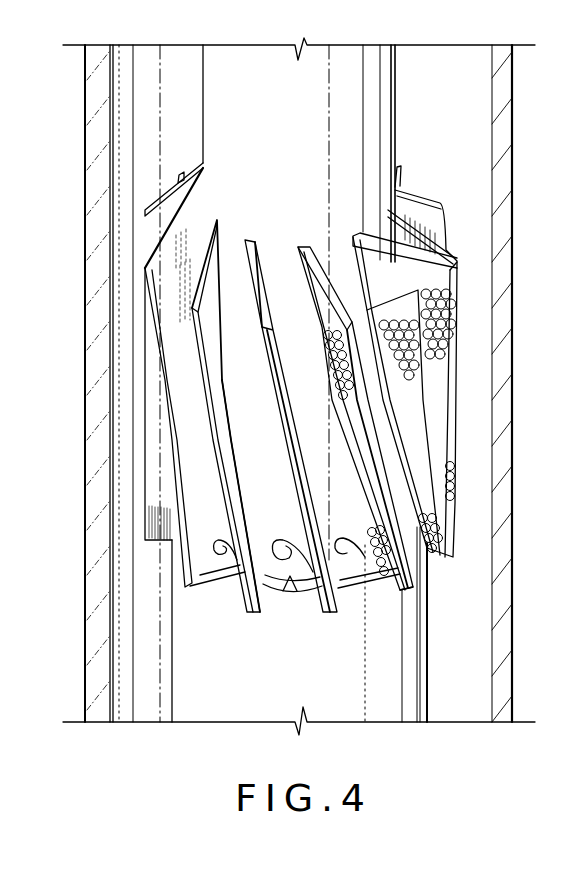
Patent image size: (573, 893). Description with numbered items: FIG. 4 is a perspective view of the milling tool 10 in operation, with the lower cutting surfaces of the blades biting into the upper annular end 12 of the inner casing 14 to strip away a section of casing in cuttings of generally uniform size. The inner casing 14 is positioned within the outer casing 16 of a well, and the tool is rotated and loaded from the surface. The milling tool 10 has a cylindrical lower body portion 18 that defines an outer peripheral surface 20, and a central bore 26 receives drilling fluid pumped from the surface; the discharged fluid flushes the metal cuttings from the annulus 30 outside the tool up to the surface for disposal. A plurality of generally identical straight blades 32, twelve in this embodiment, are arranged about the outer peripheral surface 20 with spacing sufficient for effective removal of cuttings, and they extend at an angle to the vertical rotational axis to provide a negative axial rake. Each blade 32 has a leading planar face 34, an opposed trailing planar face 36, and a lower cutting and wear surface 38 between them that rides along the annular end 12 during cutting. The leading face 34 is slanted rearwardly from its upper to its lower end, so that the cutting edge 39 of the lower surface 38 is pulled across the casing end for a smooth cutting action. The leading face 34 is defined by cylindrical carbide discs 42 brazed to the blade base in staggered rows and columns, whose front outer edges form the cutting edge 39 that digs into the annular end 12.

The milling tool 10 is at (472, 206).
The annular end 12 is at (290, 587).
The inner casing 14 is at (430, 673).
The outer casing 16 is at (503, 125).
The cylindrical lower body portion 18 is at (372, 83).
The outer peripheral surface 20 is at (379, 117).
The central bore 26 is at (564, 478).
The annulus 30 is at (478, 248).
The blades 32 is at (256, 400).
The leading planar face 34 is at (160, 440).
The trailing planar face 36 is at (155, 227).
The lower cutting and wear surface 38 is at (419, 593).
The cutting edge 39 is at (382, 578).
The carbide discs 42 is at (450, 327).